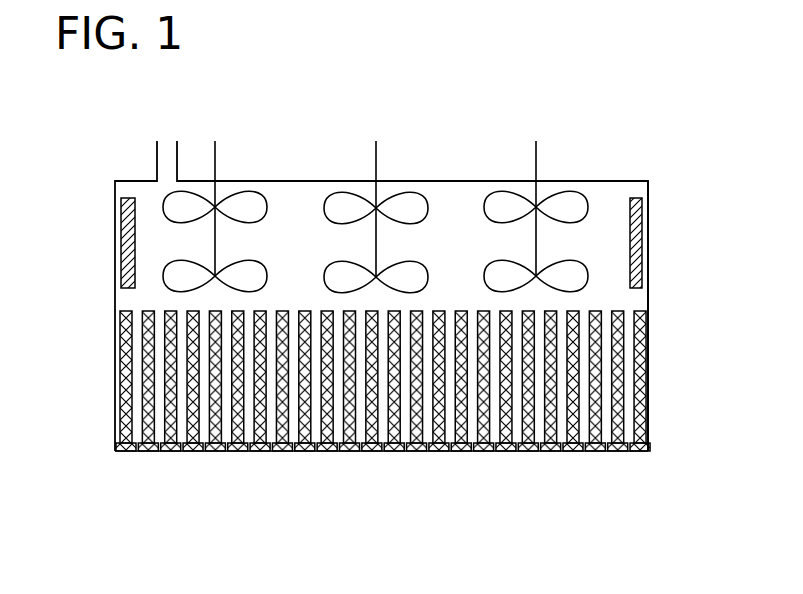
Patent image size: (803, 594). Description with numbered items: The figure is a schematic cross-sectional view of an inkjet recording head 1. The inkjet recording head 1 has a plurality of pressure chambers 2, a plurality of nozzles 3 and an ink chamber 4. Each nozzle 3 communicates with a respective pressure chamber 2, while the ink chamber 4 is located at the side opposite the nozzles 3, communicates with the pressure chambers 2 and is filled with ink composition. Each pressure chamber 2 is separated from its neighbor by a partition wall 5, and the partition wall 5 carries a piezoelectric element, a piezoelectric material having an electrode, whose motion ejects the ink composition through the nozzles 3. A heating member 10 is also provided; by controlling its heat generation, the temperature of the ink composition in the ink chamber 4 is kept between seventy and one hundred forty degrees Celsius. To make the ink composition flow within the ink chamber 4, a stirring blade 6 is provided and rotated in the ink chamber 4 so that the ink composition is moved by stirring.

The inkjet recording head 1 is at (488, 64).
The pressure chamber 2 is at (352, 405).
The nozzle 3 is at (179, 451).
The ink chamber 4 is at (613, 248).
The partition wall 5 is at (125, 343).
The stirring blade 6 is at (243, 200).
The heating member 10 is at (123, 244).